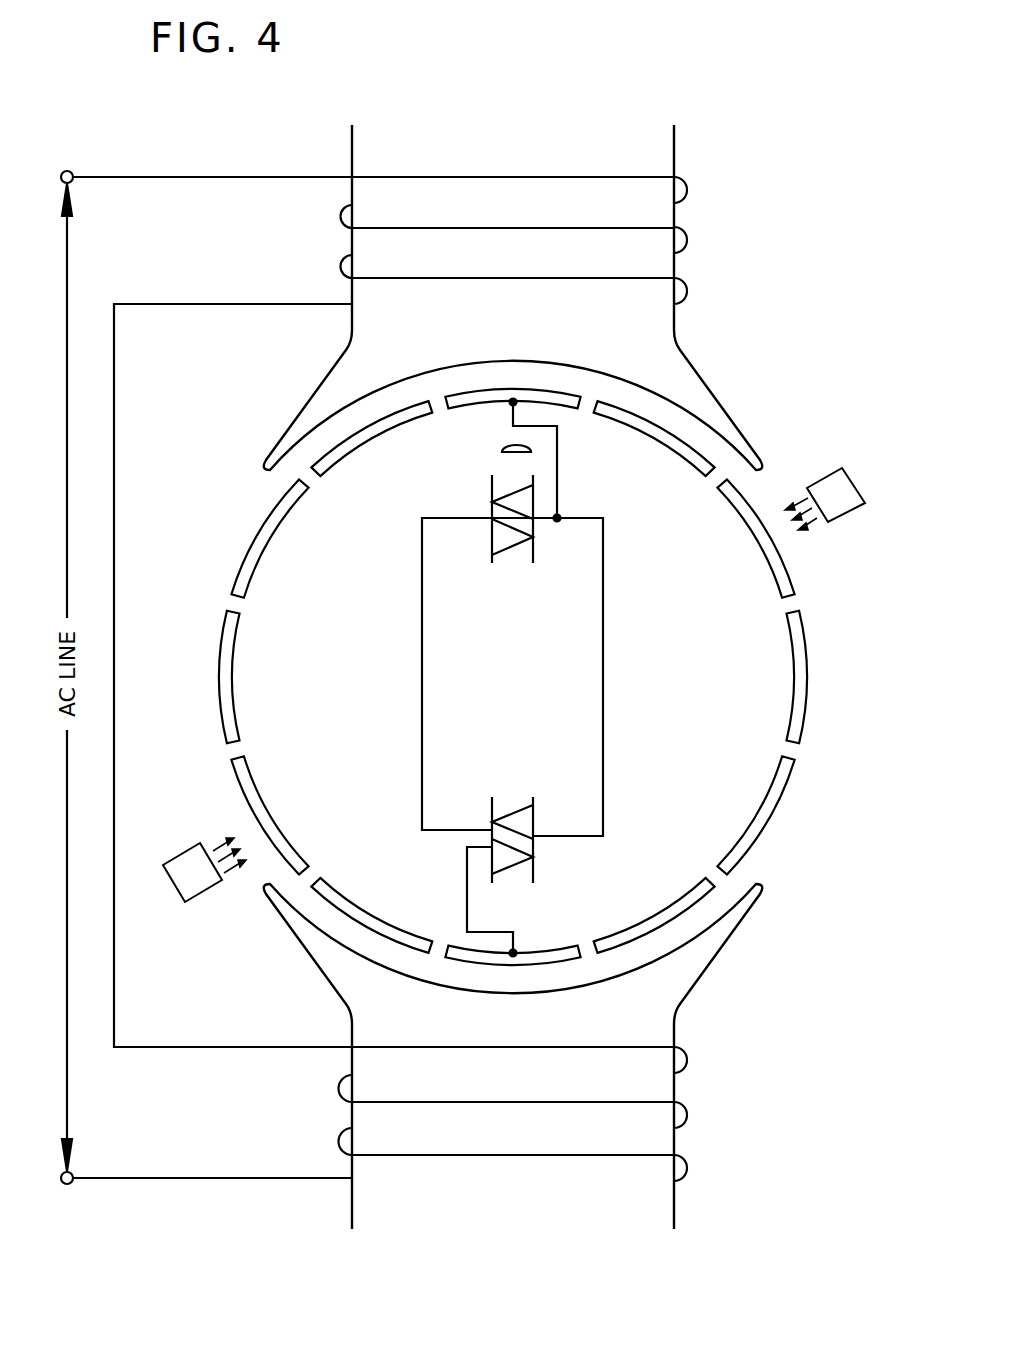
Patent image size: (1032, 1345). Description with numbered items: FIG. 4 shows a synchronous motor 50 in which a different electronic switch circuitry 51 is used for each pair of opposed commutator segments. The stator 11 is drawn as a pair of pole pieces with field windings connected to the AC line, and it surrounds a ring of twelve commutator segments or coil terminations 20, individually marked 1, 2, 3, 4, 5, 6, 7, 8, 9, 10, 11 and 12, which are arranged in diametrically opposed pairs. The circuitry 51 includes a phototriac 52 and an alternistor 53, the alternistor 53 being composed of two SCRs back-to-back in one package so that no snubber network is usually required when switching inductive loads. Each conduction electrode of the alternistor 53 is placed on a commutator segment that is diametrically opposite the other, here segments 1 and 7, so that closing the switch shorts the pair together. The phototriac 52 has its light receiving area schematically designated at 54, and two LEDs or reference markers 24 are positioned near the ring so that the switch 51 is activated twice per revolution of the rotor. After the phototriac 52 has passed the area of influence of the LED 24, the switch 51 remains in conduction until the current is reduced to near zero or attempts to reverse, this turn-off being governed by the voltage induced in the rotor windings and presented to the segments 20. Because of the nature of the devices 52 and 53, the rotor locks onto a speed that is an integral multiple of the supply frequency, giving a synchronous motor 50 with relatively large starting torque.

The commutator segment 1 is at (512, 388).
The commutator segment 2 is at (654, 438).
The commutator segment 3 is at (756, 539).
The commutator segment 4 is at (808, 677).
The commutator segment 5 is at (756, 815).
The commutator segment 6 is at (654, 915).
The commutator segment 7 is at (512, 970).
The commutator segment 8 is at (371, 916).
The commutator segment 9 is at (269, 815).
The commutator segment 10 is at (215, 677).
The stator 11 is at (684, 136).
The commutator segment 12 is at (371, 438).
The commutator segments 20 is at (802, 743).
The LED 24 is at (850, 520).
The synchronous motor 50 is at (538, 641).
The electronic switch circuitry 51 is at (554, 678).
The phototriac 52 is at (490, 532).
The alternistor 53 is at (490, 826).
The light receiving area 54 is at (492, 450).